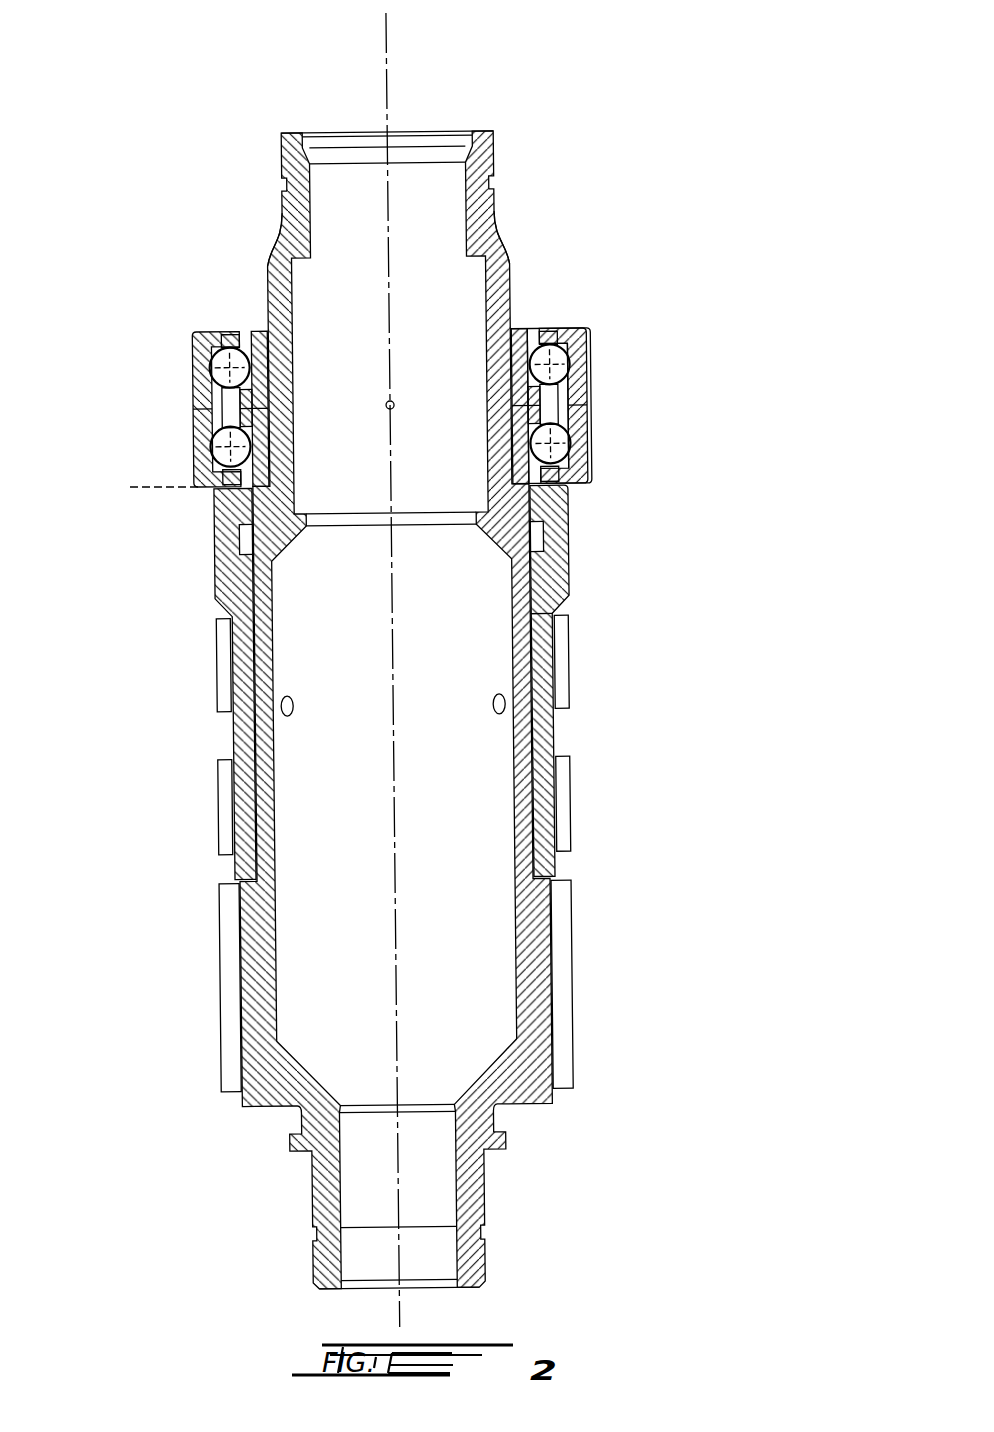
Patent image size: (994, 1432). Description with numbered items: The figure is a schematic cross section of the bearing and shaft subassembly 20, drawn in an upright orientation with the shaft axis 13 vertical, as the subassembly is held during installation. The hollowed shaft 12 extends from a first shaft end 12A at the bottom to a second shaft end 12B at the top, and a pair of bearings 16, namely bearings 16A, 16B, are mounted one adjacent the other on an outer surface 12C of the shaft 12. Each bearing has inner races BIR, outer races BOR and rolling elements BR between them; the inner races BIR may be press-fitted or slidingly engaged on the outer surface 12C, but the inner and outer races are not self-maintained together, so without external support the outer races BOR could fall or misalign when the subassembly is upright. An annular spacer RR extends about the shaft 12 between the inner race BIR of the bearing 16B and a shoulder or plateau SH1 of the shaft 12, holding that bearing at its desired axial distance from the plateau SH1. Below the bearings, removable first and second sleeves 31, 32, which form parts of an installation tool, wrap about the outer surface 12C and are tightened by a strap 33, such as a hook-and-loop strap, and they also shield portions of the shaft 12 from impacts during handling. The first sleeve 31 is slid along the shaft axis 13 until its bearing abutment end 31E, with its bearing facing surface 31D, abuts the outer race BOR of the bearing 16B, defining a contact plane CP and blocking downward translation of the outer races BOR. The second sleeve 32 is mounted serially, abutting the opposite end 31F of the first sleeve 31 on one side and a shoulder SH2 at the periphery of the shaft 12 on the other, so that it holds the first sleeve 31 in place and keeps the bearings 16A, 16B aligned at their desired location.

The hollowed shaft 12 is at (502, 256).
The first shaft end 12A is at (308, 1299).
The second shaft end 12B is at (275, 124).
The outer surface 12C is at (270, 290).
The shaft axis 13 is at (388, 58).
The bearings 16 is at (170, 322).
The bearing 16A is at (212, 314).
The bearing 16B is at (201, 490).
The bearing and shaft subassembly 20 is at (728, 121).
The first sleeve 31 is at (557, 515).
The bearing facing surface 31D is at (213, 490).
The bearing abutment end 31E is at (350, 567).
The end 31F is at (225, 740).
The second sleeve 32 is at (548, 748).
The strap 33 is at (548, 800).
The rolling elements BR is at (585, 334).
The outer races BOR is at (590, 430).
The inner races BIR is at (522, 430).
The spacer RR is at (567, 457).
The shoulder/plateau SH1 is at (515, 486).
The shoulder SH2 is at (232, 868).
The contact plane CP is at (130, 488).